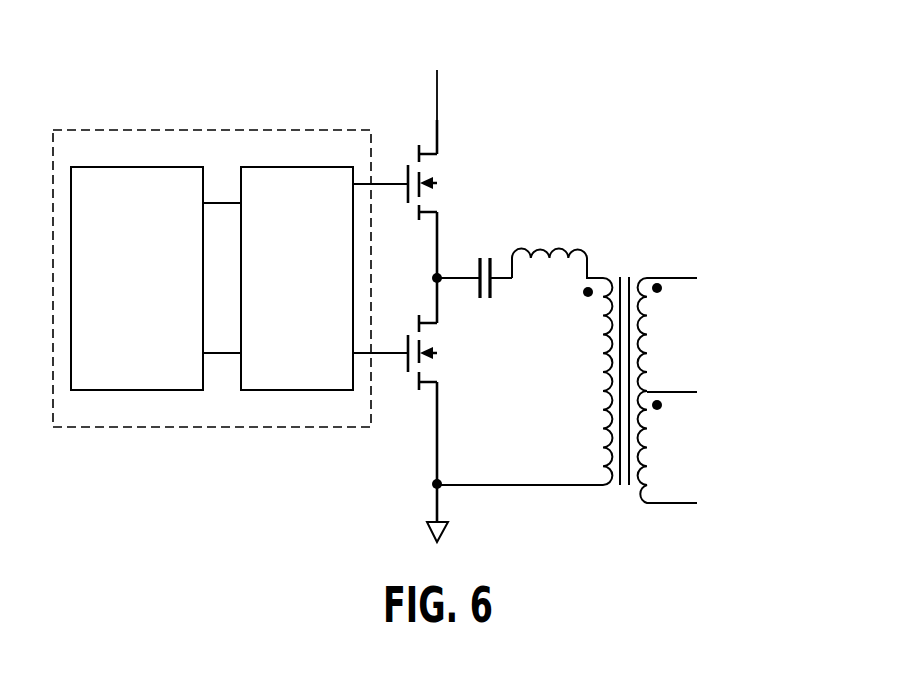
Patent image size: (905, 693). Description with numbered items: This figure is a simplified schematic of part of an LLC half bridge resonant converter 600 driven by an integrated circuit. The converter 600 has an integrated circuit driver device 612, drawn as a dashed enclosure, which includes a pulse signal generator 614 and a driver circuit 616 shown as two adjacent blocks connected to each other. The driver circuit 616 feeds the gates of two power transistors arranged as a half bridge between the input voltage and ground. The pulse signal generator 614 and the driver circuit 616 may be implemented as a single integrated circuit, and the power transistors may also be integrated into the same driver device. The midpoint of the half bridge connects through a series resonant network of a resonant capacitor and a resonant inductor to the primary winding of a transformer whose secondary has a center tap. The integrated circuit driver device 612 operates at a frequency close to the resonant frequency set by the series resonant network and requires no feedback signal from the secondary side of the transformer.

The converter 600 is at (587, 89).
The integrated circuit driver device 612 is at (202, 148).
The pulse signal generator 614 is at (146, 205).
The driver circuit 616 is at (296, 205).